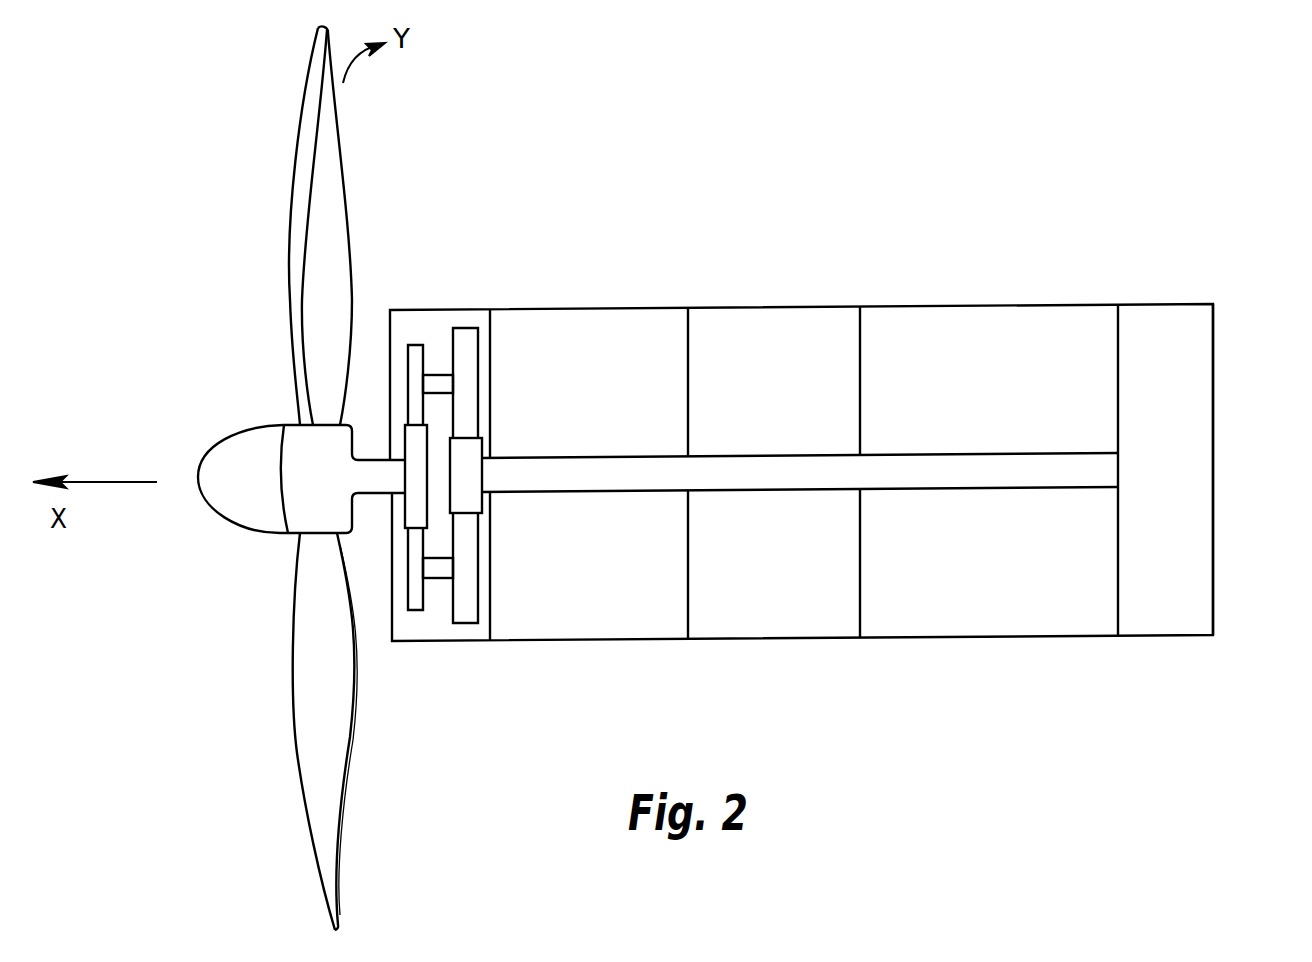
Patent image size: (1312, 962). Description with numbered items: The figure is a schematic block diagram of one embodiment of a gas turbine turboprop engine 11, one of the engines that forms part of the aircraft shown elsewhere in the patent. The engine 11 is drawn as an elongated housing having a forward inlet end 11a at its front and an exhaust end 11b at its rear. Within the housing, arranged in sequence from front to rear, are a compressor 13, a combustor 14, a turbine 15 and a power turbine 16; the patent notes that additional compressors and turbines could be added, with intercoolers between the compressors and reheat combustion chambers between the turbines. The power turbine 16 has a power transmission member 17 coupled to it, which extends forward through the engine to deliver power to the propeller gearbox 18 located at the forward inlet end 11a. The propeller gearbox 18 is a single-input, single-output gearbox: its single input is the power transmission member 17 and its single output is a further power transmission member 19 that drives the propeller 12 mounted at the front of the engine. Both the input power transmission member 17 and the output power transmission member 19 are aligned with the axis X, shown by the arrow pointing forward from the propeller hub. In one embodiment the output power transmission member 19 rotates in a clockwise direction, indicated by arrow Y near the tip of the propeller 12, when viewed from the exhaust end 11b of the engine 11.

The gas turbine turboprop engine 11 is at (940, 220).
The forward inlet end 11a is at (510, 323).
The exhaust end 11b is at (1203, 613).
The propeller 12 is at (325, 190).
The compressor 13 is at (637, 327).
The combustor 14 is at (765, 327).
The turbine 15 is at (928, 327).
The power turbine 16 is at (1173, 327).
The power transmission member 17 is at (1107, 468).
The propeller gearbox 18 is at (432, 323).
The output power transmission member 19 is at (367, 534).